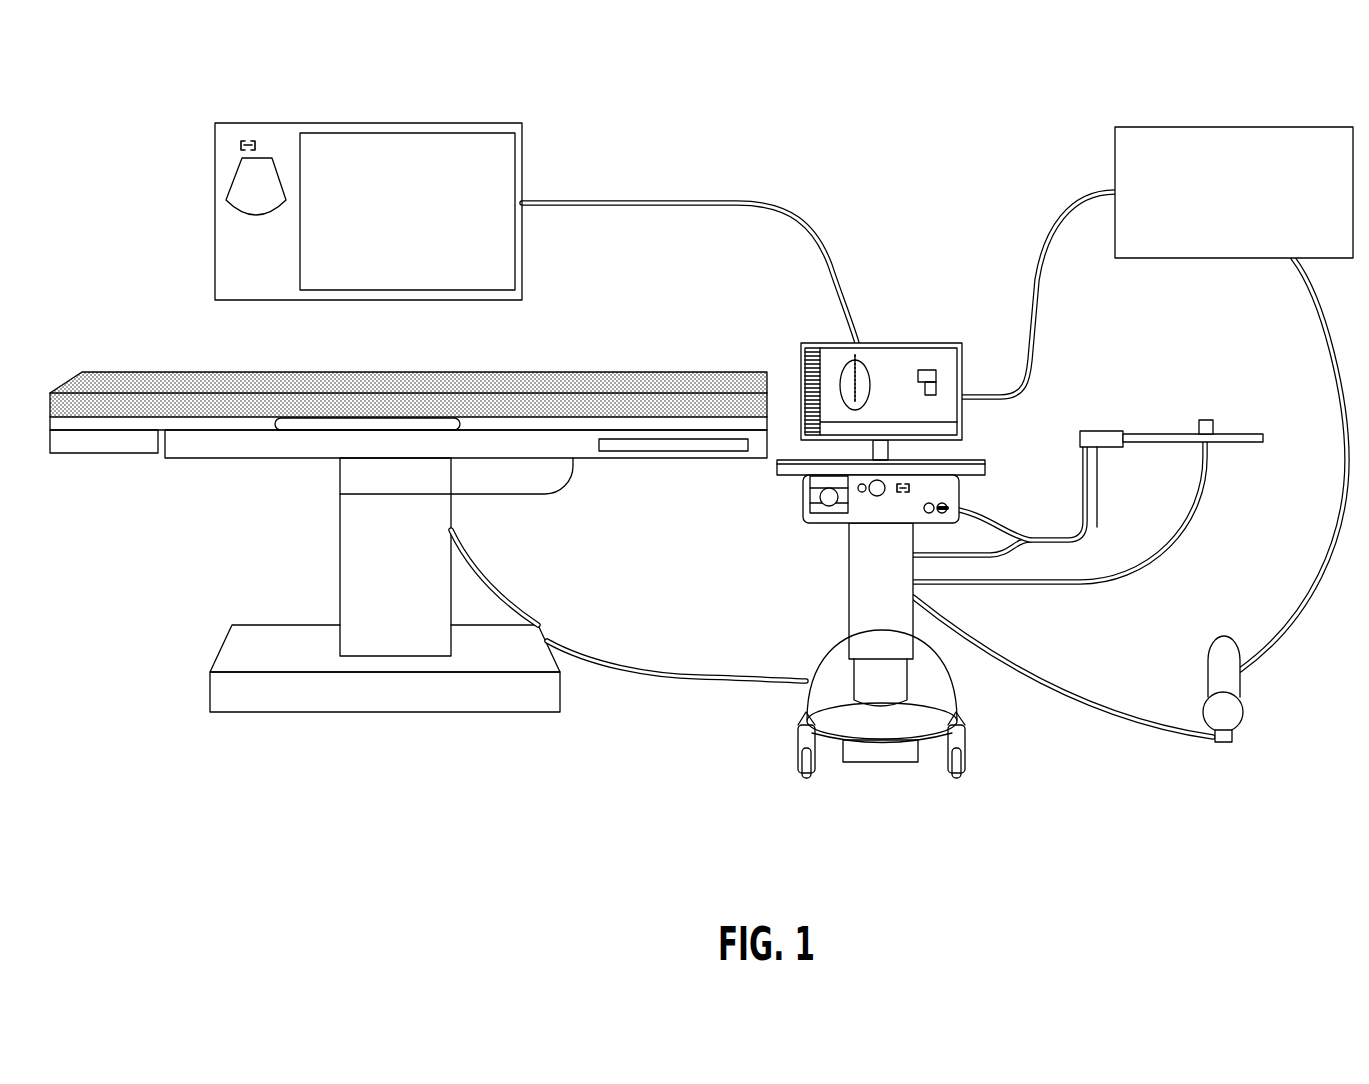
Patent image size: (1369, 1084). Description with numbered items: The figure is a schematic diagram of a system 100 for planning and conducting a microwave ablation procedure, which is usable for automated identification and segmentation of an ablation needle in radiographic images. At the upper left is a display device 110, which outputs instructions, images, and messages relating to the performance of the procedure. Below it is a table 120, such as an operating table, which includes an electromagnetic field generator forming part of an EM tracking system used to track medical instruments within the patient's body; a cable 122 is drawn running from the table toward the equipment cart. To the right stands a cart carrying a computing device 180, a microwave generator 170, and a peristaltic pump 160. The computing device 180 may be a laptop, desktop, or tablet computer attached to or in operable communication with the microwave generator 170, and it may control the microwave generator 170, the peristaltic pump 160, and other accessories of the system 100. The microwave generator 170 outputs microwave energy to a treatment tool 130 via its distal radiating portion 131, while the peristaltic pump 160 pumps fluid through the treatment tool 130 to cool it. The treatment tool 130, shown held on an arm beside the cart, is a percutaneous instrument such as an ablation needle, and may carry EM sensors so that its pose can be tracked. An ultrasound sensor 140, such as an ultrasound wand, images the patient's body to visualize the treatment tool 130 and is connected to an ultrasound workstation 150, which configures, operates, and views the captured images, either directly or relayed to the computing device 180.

The system 100 is at (276, 83).
The display device 110 is at (527, 150).
The table 120 is at (128, 372).
The table cable 122 is at (290, 432).
The treatment tool 130 is at (1105, 431).
The distal radiating portion 131 is at (1240, 433).
The ultrasound sensor 140 is at (1222, 637).
The ultrasound workstation 150 is at (1214, 234).
The peristaltic pump 160 is at (848, 568).
The microwave generator 170 is at (808, 490).
The computing device 180 is at (937, 343).